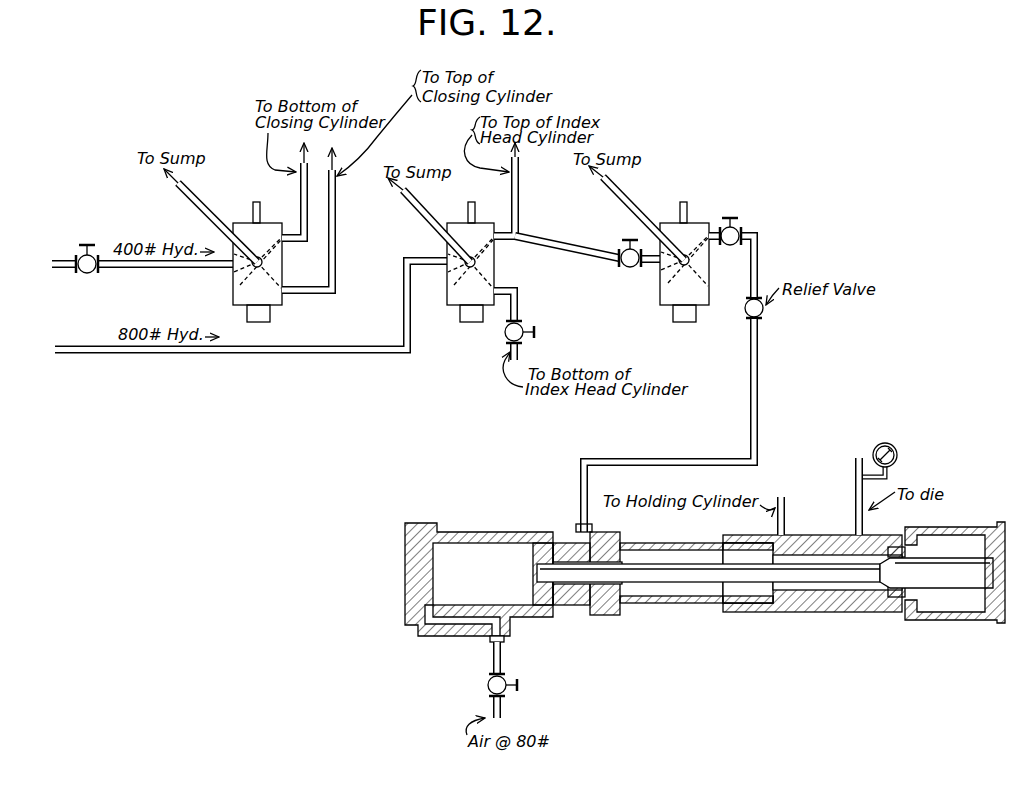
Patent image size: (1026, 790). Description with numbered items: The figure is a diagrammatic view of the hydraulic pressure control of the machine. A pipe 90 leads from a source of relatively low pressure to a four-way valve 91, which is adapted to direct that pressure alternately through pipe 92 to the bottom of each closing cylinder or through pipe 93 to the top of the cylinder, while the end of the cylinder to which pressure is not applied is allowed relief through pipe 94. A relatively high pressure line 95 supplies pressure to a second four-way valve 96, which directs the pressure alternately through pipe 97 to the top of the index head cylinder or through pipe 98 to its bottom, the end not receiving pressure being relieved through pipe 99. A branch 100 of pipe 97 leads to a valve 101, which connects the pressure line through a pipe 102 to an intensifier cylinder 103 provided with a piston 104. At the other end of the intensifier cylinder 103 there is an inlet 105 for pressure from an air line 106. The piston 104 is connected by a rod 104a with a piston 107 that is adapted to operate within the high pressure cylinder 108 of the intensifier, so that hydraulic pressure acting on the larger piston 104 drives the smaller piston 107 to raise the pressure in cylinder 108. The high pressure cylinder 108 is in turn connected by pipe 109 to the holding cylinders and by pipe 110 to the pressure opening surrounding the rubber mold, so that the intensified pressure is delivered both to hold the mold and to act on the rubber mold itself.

The pipe 90 is at (153, 266).
The four-way valve 91 is at (240, 280).
The pipe 92 is at (300, 184).
The pipe 93 is at (337, 249).
The pipe 94 is at (196, 192).
The high pressure line 95 is at (281, 348).
The four-way valve 96 is at (452, 296).
The pipe 97 is at (517, 196).
The pipe 98 is at (519, 296).
The pipe 99 is at (416, 207).
The branch 100 is at (548, 222).
The valve 101 is at (660, 280).
The pipe 102 is at (758, 368).
The intensifier cylinder 103 is at (500, 505).
The piston 104 is at (572, 606).
The rod 104a is at (690, 582).
The inlet 105 is at (440, 603).
The air line 106 is at (495, 653).
The piston 107 is at (963, 573).
The high pressure cylinder 108 is at (840, 594).
The pipe 109 is at (788, 517).
The pipe 110 is at (852, 463).